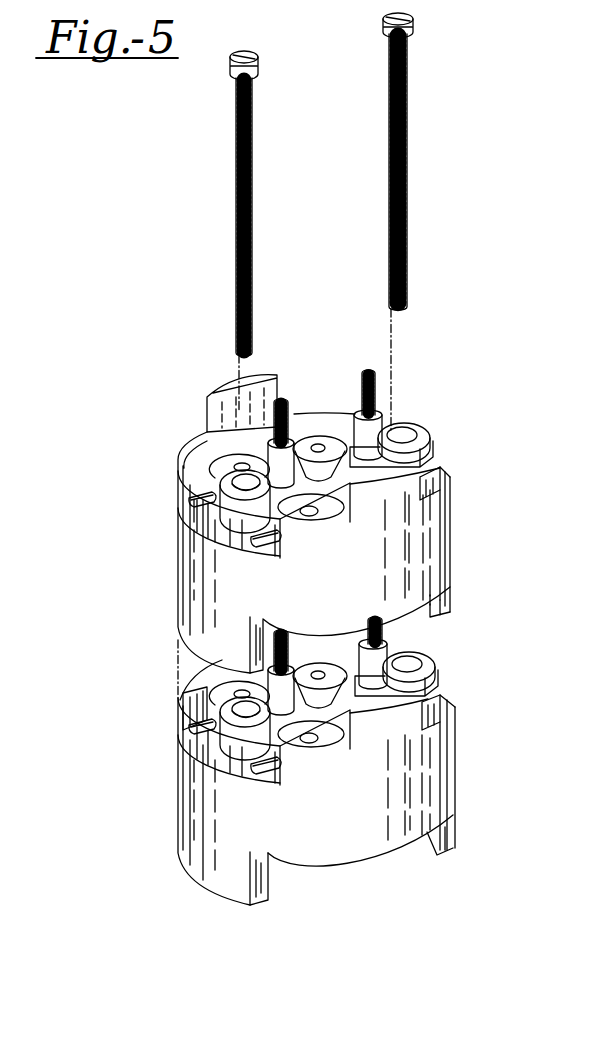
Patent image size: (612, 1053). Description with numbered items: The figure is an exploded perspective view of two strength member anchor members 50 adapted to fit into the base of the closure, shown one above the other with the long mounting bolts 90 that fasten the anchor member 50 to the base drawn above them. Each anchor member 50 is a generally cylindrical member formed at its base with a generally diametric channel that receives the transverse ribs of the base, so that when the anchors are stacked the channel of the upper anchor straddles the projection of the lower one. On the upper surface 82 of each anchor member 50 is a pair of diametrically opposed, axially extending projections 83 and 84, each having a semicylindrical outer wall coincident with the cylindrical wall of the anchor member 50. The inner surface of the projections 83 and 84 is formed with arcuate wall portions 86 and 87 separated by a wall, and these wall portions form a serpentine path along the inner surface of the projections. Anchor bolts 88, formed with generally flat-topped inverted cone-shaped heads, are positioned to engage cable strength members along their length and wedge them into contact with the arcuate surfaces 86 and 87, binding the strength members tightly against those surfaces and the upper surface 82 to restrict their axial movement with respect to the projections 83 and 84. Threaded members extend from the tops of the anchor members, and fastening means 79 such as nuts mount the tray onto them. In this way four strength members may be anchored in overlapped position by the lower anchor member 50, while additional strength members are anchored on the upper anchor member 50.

The anchor member 50 is at (452, 545).
The fastening means 79 is at (372, 395).
The upper surface 82 is at (207, 532).
The projection 83 is at (440, 470).
The projection 84 is at (177, 457).
The arcuate wall portion 86 is at (207, 440).
The arcuate wall portion 87 is at (287, 400).
The anchor bolt 88 is at (213, 470).
The mounting bolt 90 is at (388, 184).